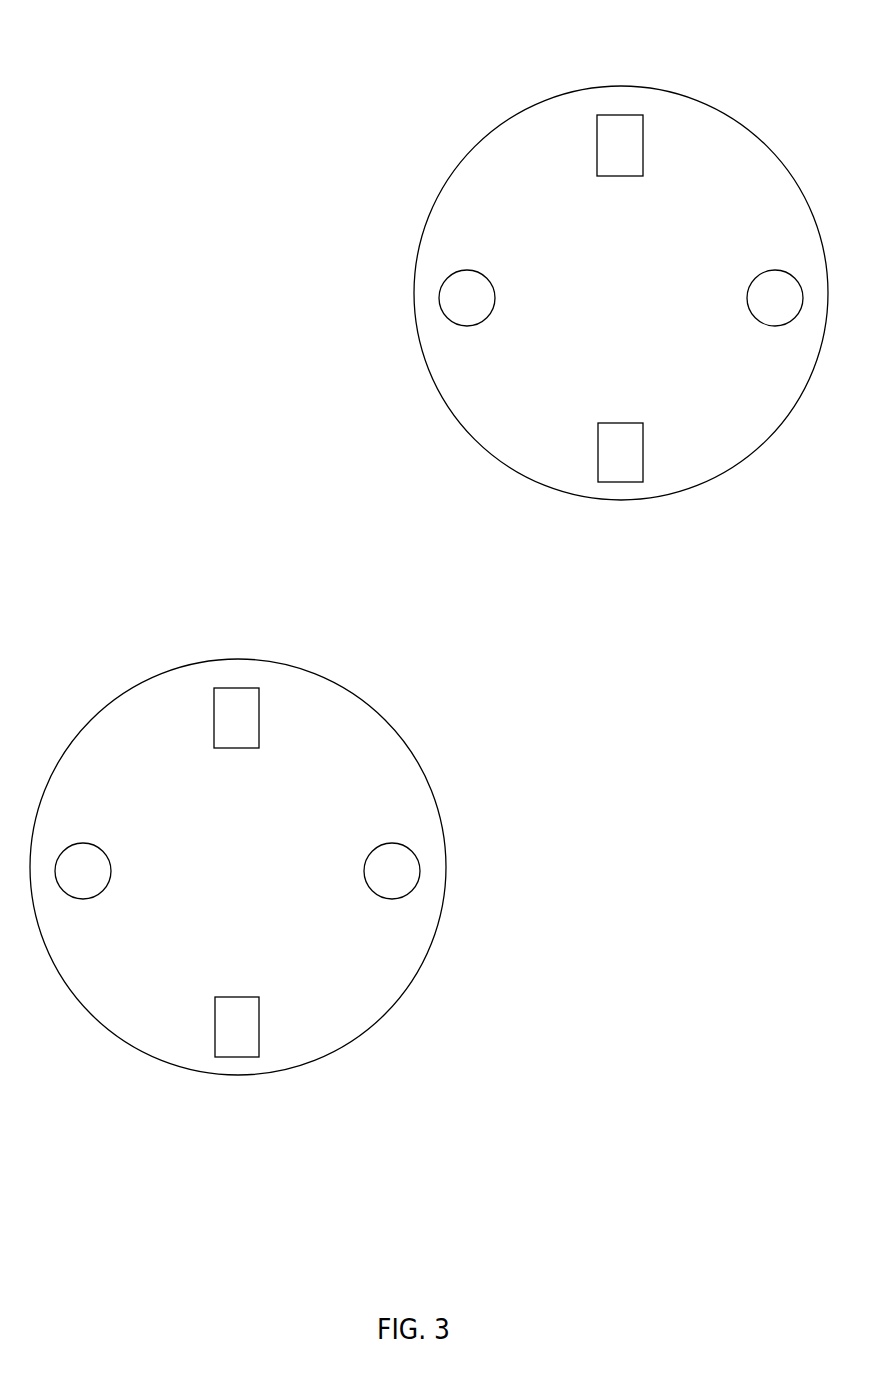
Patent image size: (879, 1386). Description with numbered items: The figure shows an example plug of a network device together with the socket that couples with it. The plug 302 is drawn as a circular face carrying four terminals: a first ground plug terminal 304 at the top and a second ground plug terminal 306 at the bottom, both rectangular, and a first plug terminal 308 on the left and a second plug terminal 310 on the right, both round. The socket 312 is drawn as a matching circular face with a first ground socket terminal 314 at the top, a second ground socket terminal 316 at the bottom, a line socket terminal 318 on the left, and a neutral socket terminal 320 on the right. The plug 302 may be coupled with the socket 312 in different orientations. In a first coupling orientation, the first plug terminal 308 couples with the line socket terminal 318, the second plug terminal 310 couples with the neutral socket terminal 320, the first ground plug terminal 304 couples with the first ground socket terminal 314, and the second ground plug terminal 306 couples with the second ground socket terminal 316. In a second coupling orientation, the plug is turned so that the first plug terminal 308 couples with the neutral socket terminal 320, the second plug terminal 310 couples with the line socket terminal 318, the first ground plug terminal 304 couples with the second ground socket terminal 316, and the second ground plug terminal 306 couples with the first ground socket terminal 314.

The plug 302 is at (620, 86).
The first ground plug terminal 304 is at (643, 157).
The second ground plug terminal 306 is at (643, 443).
The first plug terminal 308 is at (488, 279).
The second plug terminal 310 is at (747, 298).
The socket 312 is at (239, 658).
The first ground socket terminal 314 is at (259, 731).
The second ground socket terminal 316 is at (259, 1018).
The line socket terminal 318 is at (104, 852).
The neutral socket terminal 320 is at (364, 872).